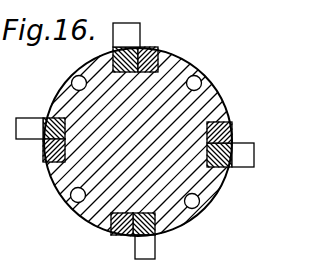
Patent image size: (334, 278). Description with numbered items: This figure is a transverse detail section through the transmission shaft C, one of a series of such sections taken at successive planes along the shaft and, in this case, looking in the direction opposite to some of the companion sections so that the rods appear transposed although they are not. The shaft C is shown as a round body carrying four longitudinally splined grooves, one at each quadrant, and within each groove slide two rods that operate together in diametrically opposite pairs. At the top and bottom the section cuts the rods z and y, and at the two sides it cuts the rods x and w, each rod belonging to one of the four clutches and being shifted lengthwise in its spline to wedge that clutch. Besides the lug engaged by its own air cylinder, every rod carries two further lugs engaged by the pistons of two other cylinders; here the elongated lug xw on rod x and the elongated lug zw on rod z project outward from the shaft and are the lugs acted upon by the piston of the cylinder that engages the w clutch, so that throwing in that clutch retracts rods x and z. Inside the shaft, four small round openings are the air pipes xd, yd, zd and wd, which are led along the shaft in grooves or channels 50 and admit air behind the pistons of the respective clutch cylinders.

The grooves or channels 50 is at (205, 81).
The transmission shaft C is at (56, 178).
The clutch rod x is at (47, 118).
The clutch rod y is at (134, 139).
The clutch rod z is at (114, 50).
The clutch rod w is at (137, 142).
The elongated lug xw is at (135, 142).
The elongated lug zw is at (134, 141).
The air pipe xd is at (202, 80).
The air pipe yd is at (198, 206).
The air pipe zd is at (75, 77).
The air pipe wd is at (76, 205).